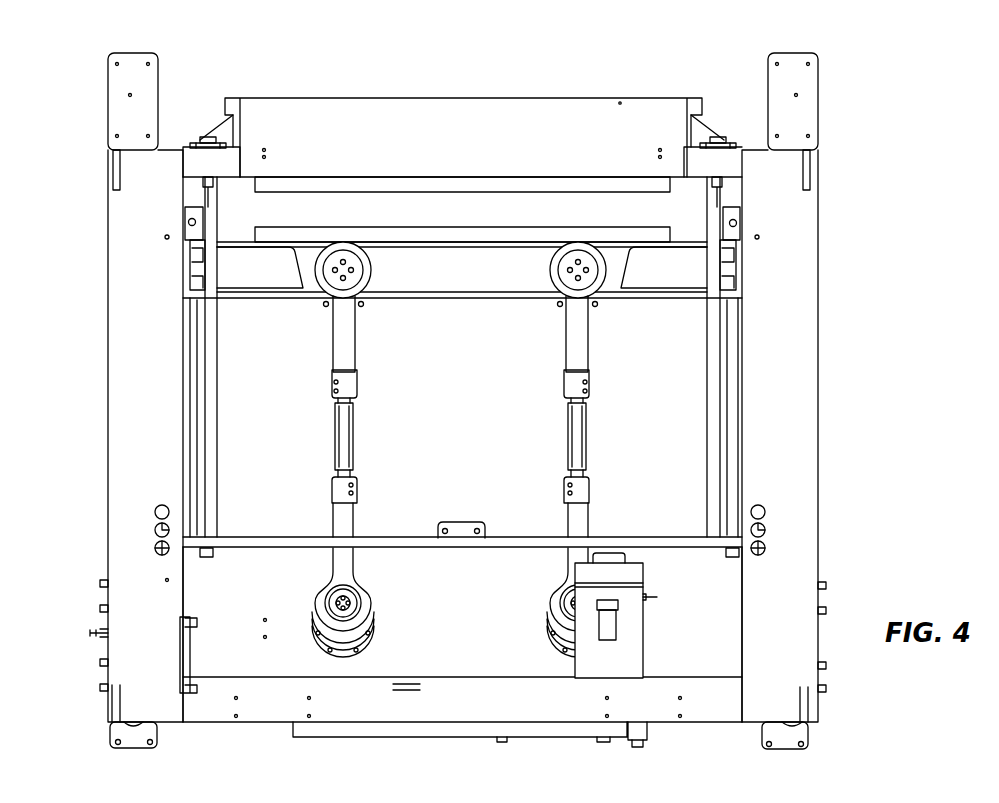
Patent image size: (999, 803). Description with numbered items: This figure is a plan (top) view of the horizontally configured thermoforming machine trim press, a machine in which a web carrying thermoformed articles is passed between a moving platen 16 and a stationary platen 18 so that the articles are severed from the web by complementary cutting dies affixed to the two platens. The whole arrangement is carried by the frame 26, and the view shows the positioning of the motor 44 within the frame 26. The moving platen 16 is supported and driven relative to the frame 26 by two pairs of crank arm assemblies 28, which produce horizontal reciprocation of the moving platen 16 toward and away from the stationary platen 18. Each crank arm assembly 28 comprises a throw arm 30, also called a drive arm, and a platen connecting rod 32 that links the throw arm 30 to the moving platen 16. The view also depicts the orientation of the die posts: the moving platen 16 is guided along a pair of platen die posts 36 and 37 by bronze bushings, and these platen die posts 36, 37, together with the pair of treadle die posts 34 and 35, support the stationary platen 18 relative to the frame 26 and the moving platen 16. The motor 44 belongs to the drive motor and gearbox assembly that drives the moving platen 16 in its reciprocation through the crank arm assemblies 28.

The moving platen 16 is at (455, 240).
The stationary platen 18 is at (351, 178).
The frame 26 is at (817, 226).
The crank arm assemblies 28 is at (373, 449).
The throw arm 30 is at (370, 628).
The platen connecting rod 32 is at (356, 485).
The treadle die post 34 is at (705, 377).
The treadle die post 35 is at (218, 373).
The platen die post 36 is at (706, 441).
The platen die post 37 is at (218, 441).
The motor 44 is at (643, 660).